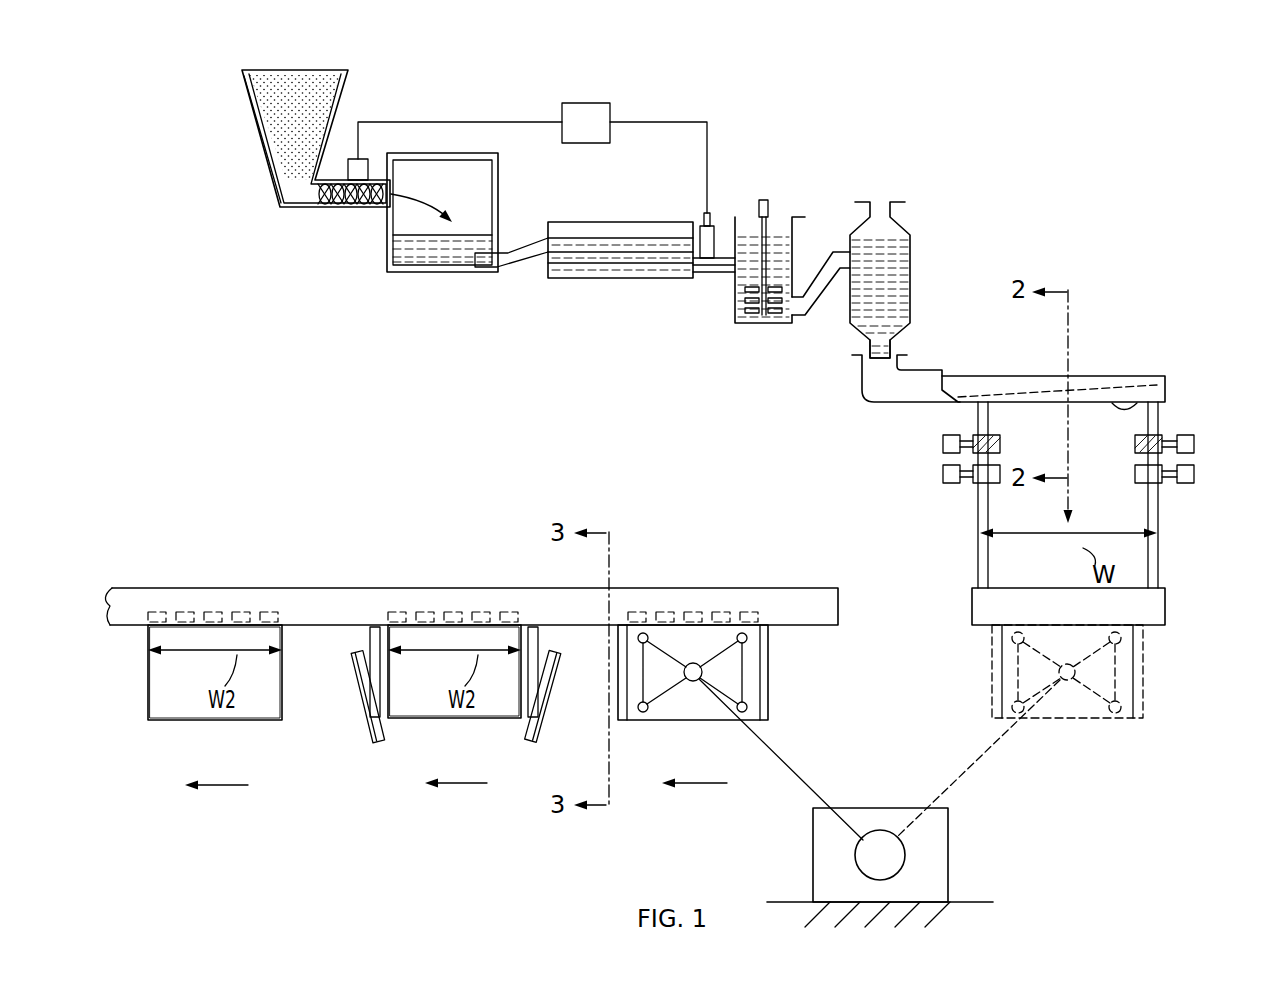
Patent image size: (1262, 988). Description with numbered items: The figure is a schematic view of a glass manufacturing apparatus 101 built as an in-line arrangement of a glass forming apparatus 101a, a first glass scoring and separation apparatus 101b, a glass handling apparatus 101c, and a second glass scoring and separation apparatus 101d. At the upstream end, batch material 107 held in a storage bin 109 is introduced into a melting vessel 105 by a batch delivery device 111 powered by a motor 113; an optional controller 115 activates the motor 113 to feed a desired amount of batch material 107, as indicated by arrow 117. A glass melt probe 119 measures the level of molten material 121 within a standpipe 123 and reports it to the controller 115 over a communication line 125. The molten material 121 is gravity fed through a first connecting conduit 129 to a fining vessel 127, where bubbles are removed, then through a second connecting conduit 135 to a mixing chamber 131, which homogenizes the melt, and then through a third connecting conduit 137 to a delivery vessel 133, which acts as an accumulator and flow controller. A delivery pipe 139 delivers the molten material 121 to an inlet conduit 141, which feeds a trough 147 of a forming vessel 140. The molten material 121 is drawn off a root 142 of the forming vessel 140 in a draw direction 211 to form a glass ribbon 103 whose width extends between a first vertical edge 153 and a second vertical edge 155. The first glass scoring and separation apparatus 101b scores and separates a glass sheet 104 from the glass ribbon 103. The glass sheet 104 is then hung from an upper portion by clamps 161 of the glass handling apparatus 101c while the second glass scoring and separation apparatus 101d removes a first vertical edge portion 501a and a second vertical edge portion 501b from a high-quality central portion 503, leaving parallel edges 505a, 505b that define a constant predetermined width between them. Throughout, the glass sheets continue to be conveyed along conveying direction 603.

The glass manufacturing apparatus 101 is at (1014, 80).
The glass forming apparatus 101a is at (899, 180).
The first glass scoring and separation apparatus 101b is at (1174, 589).
The glass handling apparatus 101c is at (710, 557).
The second glass scoring and separation apparatus 101d is at (530, 606).
The glass ribbon 103 is at (1143, 428).
The glass sheet 104 is at (1155, 673).
The melting vessel 105 is at (440, 273).
The batch material 107 is at (299, 68).
The storage bin 109 is at (261, 153).
The batch delivery device 111 is at (337, 208).
The motor 113 is at (362, 158).
The controller 115 is at (585, 103).
The arrow 117 is at (408, 193).
The glass melt probe 119 is at (704, 214).
The molten material 121 is at (456, 235).
The standpipe 123 is at (724, 250).
The communication line 125 is at (667, 122).
The fining vessel 127 is at (617, 222).
The first connecting conduit 129 is at (522, 246).
The mixing chamber 131 is at (752, 326).
The delivery vessel 133 is at (912, 280).
The second connecting conduit 135 is at (712, 276).
The third connecting conduit 137 is at (818, 301).
The delivery pipe 139 is at (893, 352).
The forming vessel 140 is at (1154, 341).
The inlet conduit 141 is at (855, 405).
The root 142 is at (1133, 400).
The trough 147 is at (1076, 385).
The first vertical edge 153 is at (977, 509).
The second vertical edge 155 is at (1158, 520).
The clamps 161 is at (395, 612).
The draw direction 211 is at (1070, 497).
The first vertical edge portion 501a is at (367, 723).
The second vertical edge portion 501b is at (537, 723).
The high-quality central portion 503 is at (192, 708).
The parallel edge 505a is at (383, 660).
The parallel edge 505b is at (536, 660).
The conveying direction 603 is at (707, 786).